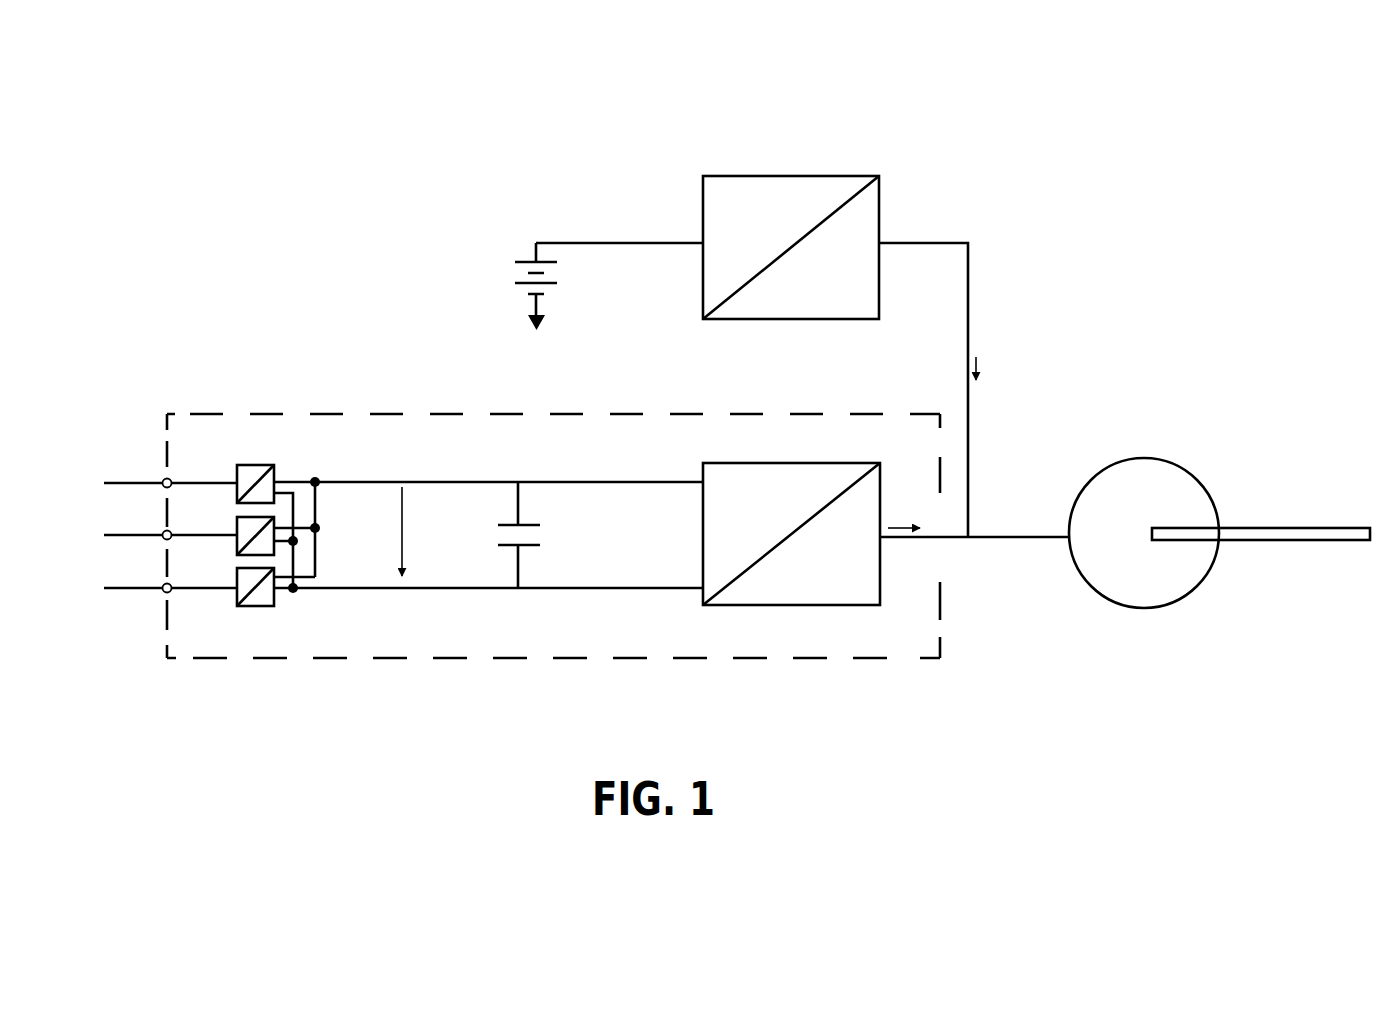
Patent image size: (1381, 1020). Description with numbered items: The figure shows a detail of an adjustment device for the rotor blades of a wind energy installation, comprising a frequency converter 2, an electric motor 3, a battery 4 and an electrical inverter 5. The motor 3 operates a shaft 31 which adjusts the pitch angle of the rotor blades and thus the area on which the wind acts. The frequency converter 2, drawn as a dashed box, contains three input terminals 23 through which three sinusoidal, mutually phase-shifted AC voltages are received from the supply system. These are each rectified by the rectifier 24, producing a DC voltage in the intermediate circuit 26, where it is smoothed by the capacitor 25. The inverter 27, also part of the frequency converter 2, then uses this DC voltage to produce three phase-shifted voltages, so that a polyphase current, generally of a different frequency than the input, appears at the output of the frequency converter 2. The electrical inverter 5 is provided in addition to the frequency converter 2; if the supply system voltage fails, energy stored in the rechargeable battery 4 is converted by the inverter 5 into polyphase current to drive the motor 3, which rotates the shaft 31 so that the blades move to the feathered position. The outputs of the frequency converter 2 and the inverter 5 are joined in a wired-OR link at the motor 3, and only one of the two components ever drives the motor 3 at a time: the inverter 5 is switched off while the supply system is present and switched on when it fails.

The frequency converter 2 is at (863, 660).
The electric motor 3 is at (938, 251).
The battery 4 is at (501, 261).
The electrical inverter 5 is at (815, 175).
The input terminals 23 is at (140, 476).
The rectifier 24 is at (288, 608).
The capacitor 25 is at (503, 525).
The intermediate circuit 26 is at (551, 518).
The inverter 27 is at (775, 517).
The shaft 31 is at (1273, 541).